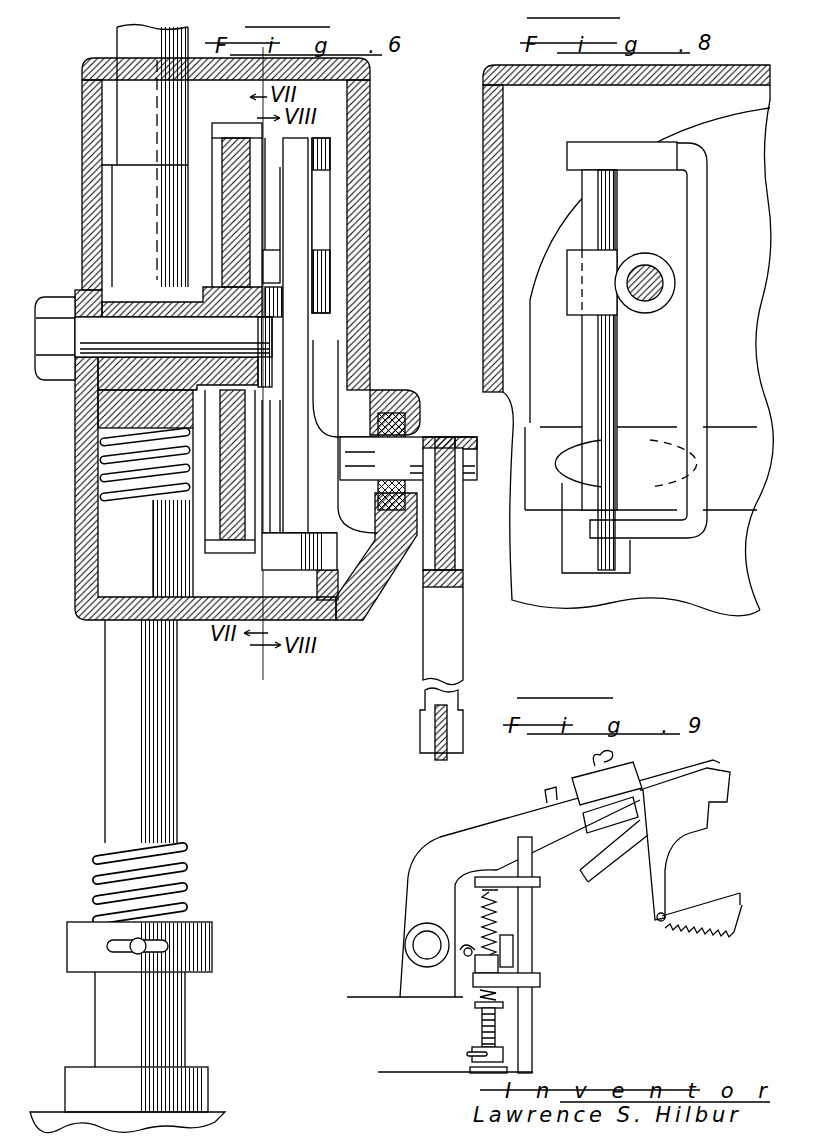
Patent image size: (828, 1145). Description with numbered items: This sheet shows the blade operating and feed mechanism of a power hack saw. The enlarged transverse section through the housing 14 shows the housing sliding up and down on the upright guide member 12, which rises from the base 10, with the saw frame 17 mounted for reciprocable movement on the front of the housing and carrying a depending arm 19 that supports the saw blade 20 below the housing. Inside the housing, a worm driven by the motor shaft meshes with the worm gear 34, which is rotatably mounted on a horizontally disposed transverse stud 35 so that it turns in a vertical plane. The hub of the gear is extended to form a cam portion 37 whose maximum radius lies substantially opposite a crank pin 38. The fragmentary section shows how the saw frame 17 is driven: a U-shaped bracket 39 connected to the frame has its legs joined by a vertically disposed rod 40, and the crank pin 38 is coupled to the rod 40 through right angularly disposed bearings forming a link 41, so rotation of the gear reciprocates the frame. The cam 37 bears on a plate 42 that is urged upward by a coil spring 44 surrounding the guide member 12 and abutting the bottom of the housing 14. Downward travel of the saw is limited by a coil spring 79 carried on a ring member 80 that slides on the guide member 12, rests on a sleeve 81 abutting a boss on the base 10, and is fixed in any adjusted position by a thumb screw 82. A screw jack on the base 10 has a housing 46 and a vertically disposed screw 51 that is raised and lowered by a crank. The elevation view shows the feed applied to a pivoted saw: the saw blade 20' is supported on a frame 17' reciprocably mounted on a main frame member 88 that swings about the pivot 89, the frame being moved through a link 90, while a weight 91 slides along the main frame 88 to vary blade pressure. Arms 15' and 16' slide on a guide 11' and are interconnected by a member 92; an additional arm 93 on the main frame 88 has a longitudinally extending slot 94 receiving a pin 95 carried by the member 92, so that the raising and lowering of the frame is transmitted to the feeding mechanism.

In FIG. 6, the base 10 is at (215, 1112).
In FIG. 6, the guide member 12 is at (157, 740).
In FIG. 6, the housing 14 is at (363, 167).
In FIG. 8, the housing 14 is at (490, 138).
In FIG. 6, the saw frame 17 is at (463, 512).
In FIG. 6, the depending arm 19 is at (450, 643).
In FIG. 6, the saw blade 20 is at (458, 724).
In FIG. 6, the worm gear 34 is at (233, 517).
In FIG. 6, the transverse stud 35 is at (110, 330).
In FIG. 6, the cam portion 37 is at (127, 310).
In FIG. 8, the crank pin 38 is at (647, 273).
In FIG. 6, the bracket 39 is at (302, 335).
In FIG. 8, the bracket 39 is at (697, 290).
In FIG. 8, the rod 40 is at (596, 382).
In FIG. 6, the link 41 is at (322, 268).
In FIG. 8, the link 41 is at (618, 258).
In FIG. 6, the plate 42 is at (100, 440).
In FIG. 6, the coil spring 44 is at (105, 497).
In FIG. 6, the coil spring 79 is at (180, 872).
In FIG. 6, the ring member 80 is at (192, 943).
In FIG. 6, the sleeve 81 is at (155, 1018).
In FIG. 6, the thumb screw 82 is at (137, 948).
In FIG. 9, the main frame member 88 is at (540, 823).
In FIG. 9, the pivot 89 is at (405, 942).
In FIG. 9, the link 90 is at (635, 842).
In FIG. 9, the weight 91 is at (627, 775).
In FIG. 9, the member 92 is at (500, 920).
In FIG. 9, the additional arm 93 is at (470, 968).
In FIG. 9, the slot 94 is at (505, 953).
In FIG. 9, the pin 95 is at (468, 948).
In FIG. 9, the guide 11' is at (540, 942).
In FIG. 9, the arm 15' is at (526, 955).
In FIG. 9, the arm 16' is at (529, 983).
In FIG. 9, the frame 17' is at (698, 844).
In FIG. 9, the saw blade 20' is at (702, 919).
In FIG. 9, the jack housing 46 is at (480, 1062).
In FIG. 9, the screw 51 is at (486, 1027).